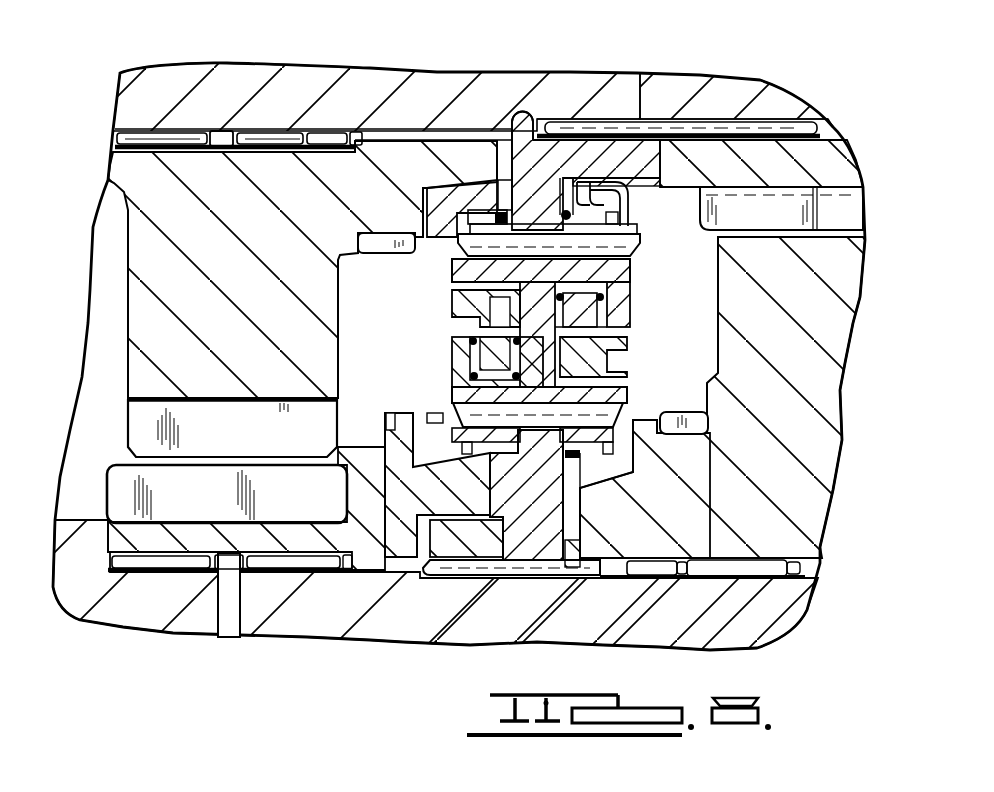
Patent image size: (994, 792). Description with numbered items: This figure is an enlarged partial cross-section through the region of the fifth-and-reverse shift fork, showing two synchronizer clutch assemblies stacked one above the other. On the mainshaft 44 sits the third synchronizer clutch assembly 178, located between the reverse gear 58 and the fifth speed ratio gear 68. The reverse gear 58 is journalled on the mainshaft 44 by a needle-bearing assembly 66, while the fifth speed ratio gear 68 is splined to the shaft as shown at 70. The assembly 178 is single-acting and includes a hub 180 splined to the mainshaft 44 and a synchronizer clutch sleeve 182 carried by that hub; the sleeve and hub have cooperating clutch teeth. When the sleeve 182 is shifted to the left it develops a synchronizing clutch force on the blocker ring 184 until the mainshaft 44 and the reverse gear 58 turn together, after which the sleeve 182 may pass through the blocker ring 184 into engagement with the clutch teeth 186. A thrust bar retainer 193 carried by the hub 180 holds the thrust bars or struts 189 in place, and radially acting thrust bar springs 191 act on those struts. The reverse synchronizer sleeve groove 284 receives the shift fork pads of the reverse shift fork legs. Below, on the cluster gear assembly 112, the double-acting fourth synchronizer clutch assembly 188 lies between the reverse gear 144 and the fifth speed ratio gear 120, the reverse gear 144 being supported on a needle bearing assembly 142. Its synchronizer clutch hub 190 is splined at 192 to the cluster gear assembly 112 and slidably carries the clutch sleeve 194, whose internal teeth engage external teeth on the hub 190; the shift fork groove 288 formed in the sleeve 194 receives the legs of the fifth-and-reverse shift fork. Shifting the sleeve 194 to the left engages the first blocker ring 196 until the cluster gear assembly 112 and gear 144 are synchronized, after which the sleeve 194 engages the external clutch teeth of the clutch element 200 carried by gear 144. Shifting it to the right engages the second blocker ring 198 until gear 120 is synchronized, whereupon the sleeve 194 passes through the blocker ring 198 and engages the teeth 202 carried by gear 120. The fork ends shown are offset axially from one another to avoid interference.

The mainshaft 44 is at (441, 90).
The needle-bearing assembly 66 is at (307, 128).
The radially acting thrust bar springs 191 is at (522, 158).
The hub 180 is at (563, 157).
The blocker ring 184 is at (455, 200).
The spline 70 is at (747, 127).
The fifth speed ratio gear 68 is at (810, 155).
The clutch teeth 186 is at (375, 235).
The reverse gear 58 is at (165, 323).
The thrust bar retainer 193 is at (630, 190).
The thrust bars or struts 189 is at (627, 220).
The synchronizer clutch sleeve 182 is at (630, 295).
The third synchronizer clutch assembly 178 is at (634, 306).
The reverse synchronizer sleeve groove 284 is at (608, 337).
The shift fork groove 288 is at (465, 337).
The clutch sleeve 194 is at (460, 345).
The fourth synchronizer clutch assembly 188 is at (452, 384).
The clutch element 200 is at (337, 447).
The first blocker ring 196 is at (495, 483).
The teeth 202 is at (706, 424).
The second blocker ring 198 is at (633, 477).
The fifth speed ratio gear 120 is at (812, 355).
The needle bearing assembly 142 is at (305, 547).
The reverse gear 144 is at (307, 542).
The cluster gear assembly 112 is at (212, 623).
The spline 192 is at (453, 578).
The synchronizer clutch hub 190 is at (537, 538).